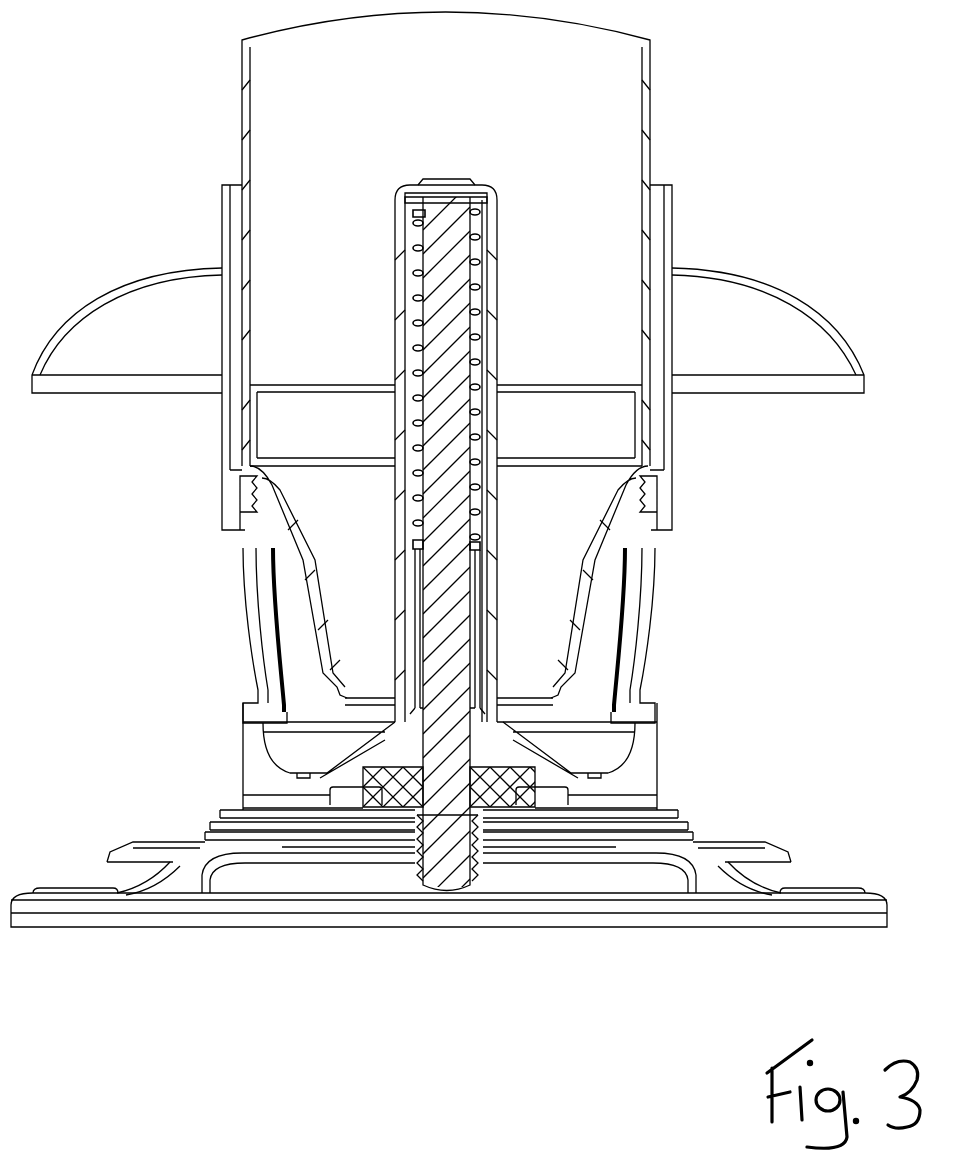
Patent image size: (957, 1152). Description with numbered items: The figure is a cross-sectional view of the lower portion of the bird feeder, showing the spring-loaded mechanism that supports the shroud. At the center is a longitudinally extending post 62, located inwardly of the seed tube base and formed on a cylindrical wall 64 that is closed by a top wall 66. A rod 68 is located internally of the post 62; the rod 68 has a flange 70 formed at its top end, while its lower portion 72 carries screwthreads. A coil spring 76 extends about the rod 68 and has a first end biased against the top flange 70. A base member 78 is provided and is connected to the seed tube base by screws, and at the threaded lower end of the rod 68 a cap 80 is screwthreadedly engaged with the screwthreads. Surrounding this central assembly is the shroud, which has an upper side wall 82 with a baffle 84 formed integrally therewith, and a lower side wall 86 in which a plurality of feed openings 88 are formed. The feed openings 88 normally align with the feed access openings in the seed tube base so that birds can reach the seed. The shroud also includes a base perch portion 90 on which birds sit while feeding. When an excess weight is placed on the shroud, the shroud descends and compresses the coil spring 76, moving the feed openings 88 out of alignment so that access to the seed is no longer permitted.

The post 62 is at (558, 244).
The cylindrical wall 64 is at (497, 330).
The top wall 66 is at (456, 184).
The rod 68 is at (445, 326).
The flange 70 is at (500, 207).
The lower portion 72 is at (452, 862).
The coil spring 76 is at (493, 440).
The base member 78 is at (405, 793).
The cap 80 is at (472, 866).
The upper side wall 82 is at (660, 235).
The baffle 84 is at (812, 322).
The lower side wall 86 is at (652, 760).
The feed openings 88 is at (699, 637).
The base perch portion 90 is at (799, 828).